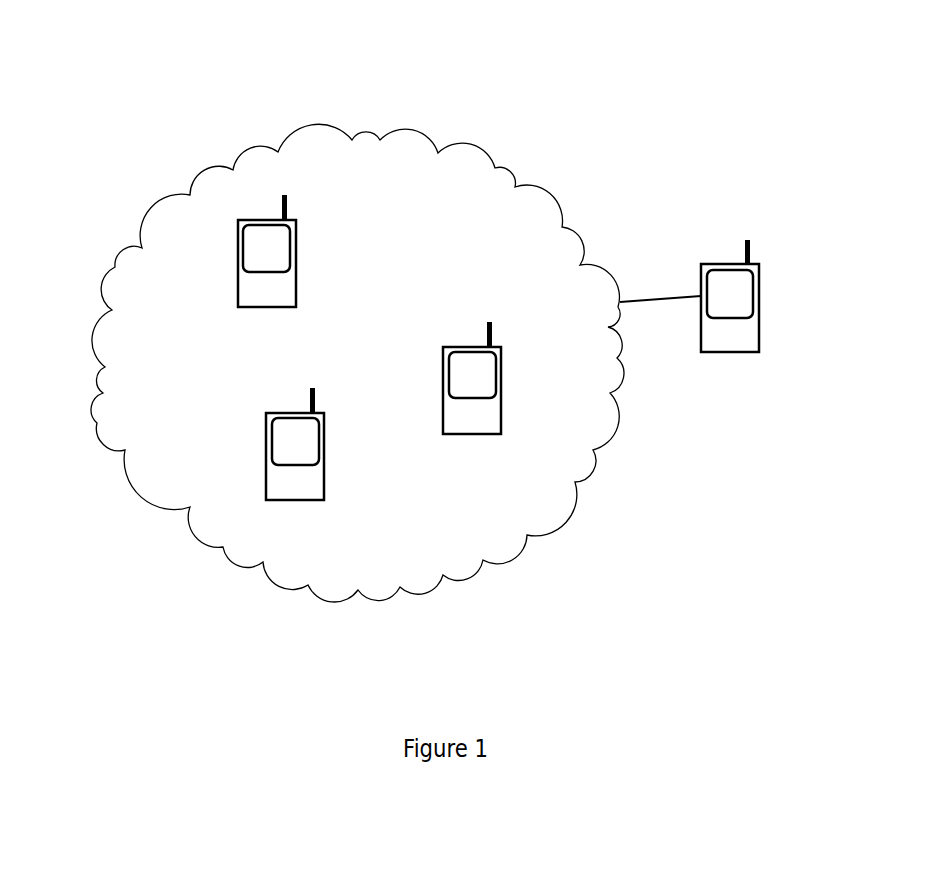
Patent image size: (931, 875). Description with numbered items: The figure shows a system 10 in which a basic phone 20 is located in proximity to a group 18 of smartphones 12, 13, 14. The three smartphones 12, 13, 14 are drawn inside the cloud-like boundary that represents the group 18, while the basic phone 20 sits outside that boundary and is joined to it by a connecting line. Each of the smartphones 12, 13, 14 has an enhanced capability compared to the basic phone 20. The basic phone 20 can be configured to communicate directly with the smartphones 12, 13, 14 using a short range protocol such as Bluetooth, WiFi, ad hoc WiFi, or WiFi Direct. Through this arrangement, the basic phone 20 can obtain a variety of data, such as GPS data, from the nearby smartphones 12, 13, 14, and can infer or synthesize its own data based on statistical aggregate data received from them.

The system 10 is at (694, 69).
The group of smartphones 18 is at (117, 265).
The smartphone 12 is at (296, 272).
The smartphone 13 is at (320, 489).
The smartphone 14 is at (443, 354).
The basic phone 20 is at (758, 330).